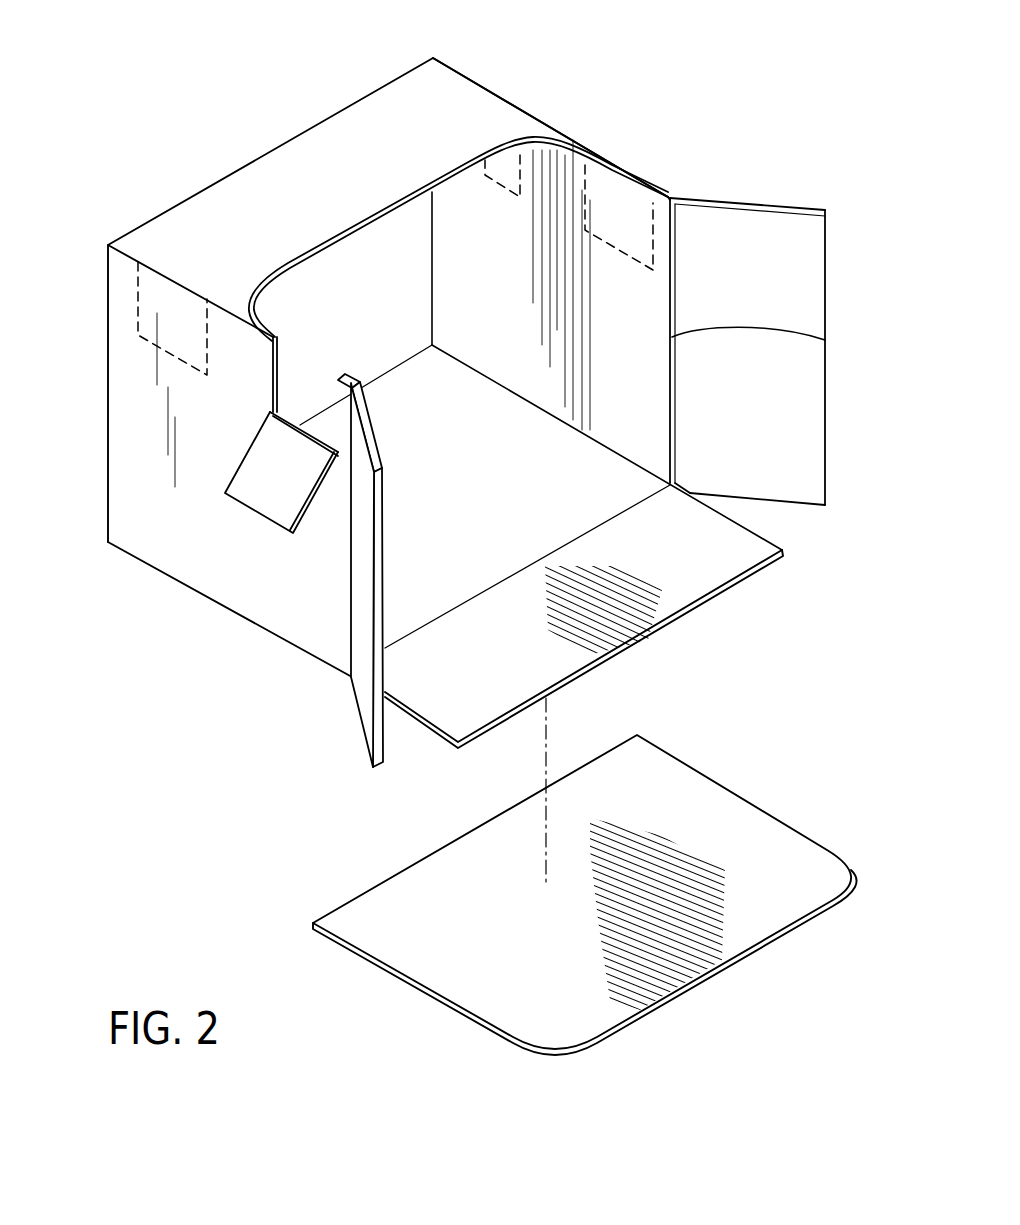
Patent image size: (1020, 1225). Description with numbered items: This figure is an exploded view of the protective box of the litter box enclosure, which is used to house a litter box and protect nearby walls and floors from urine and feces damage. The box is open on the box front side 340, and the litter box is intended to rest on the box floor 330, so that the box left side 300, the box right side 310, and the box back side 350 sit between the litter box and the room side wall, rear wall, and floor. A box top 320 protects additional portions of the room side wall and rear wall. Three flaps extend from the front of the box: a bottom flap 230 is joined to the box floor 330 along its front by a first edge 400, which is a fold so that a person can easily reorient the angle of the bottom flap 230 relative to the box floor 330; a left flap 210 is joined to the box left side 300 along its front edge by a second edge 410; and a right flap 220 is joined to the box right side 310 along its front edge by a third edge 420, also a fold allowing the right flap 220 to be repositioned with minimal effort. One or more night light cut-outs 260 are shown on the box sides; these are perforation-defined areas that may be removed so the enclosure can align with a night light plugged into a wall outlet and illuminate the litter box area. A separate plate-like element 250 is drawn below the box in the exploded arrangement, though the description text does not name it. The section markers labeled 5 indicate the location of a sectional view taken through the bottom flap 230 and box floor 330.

The left flap 210 is at (363, 690).
The right flap 220 is at (760, 227).
The bottom flap 230 is at (433, 707).
The base plate 250 is at (505, 1005).
The night light cut-outs 260 is at (297, 448).
The box left side 300 is at (223, 582).
The box right side 310 is at (572, 183).
The box top 320 is at (497, 113).
The box floor 330 is at (543, 537).
The box front side 340 is at (797, 520).
The box back side 350 is at (292, 353).
The first edge 400 is at (470, 598).
The second edge 410 is at (350, 635).
The third edge 420 is at (825, 340).
The section line 5- 5 is at (722, 560).